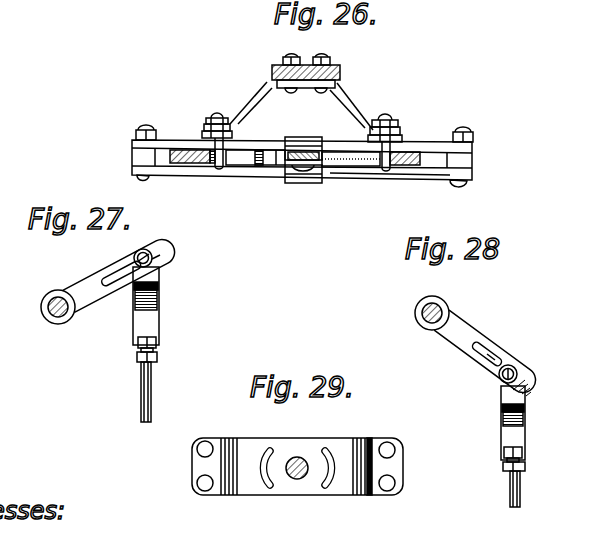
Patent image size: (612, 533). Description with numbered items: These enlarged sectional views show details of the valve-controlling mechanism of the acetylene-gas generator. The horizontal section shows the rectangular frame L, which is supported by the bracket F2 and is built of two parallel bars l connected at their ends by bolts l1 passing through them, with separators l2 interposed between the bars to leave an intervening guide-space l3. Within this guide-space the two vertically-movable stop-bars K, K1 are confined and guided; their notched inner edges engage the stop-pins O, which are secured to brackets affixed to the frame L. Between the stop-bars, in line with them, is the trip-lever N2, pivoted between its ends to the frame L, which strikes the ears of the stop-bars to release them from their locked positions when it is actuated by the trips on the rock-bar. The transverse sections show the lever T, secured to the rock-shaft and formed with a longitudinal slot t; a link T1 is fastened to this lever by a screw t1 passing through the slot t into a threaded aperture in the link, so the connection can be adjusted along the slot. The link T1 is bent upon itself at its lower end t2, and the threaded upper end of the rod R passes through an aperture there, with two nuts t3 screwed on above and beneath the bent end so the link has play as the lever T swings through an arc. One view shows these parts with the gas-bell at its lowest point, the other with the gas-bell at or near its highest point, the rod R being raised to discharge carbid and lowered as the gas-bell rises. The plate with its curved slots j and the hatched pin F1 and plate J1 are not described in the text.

In FIG. 26, the parallel bar l is at (134, 146).
In FIG. 26, the bolt l1 is at (147, 129).
In FIG. 26, the separator l2 is at (492, 178).
In FIG. 26, the guide-space l3 is at (278, 162).
In FIG. 26, the stop-bar K is at (196, 164).
In FIG. 26, the stop-bar K1 is at (372, 165).
In FIG. 26, the stop-pin O is at (205, 126).
In FIG. 26, the trip-lever N2 is at (306, 136).
In FIG. 26, the rectangular frame L is at (392, 177).
In FIG. 26, the bracket F2 is at (341, 74).
In FIG. 27, the lever T is at (100, 300).
In FIG. 28, the lever T is at (460, 350).
In FIG. 27, the link T1 is at (160, 325).
In FIG. 28, the link T1 is at (526, 428).
In FIG. 27, the longitudinal slot t is at (170, 262).
In FIG. 28, the longitudinal slot t is at (491, 356).
In FIG. 27, the screw t1 is at (150, 251).
In FIG. 28, the screw t1 is at (518, 371).
In FIG. 27, the bent lower end t2 is at (158, 357).
In FIG. 28, the bent lower end t2 is at (527, 464).
In FIG. 27, the nut t3 is at (137, 345).
In FIG. 28, the nut t3 is at (503, 454).
In FIG. 27, the rod R is at (152, 407).
In FIG. 28, the rod R is at (509, 494).
In FIG. 27, the fulcrum pin F1 is at (54, 317).
In FIG. 28, the fulcrum pin F1 is at (423, 315).
In FIG. 29, the fulcrum pin F1 is at (292, 479).
In FIG. 29, the curved slot j is at (267, 448).
In FIG. 29, the plate J1 is at (298, 446).